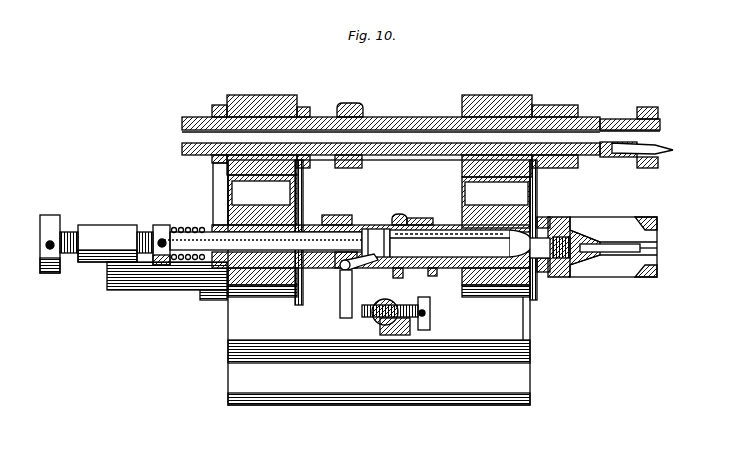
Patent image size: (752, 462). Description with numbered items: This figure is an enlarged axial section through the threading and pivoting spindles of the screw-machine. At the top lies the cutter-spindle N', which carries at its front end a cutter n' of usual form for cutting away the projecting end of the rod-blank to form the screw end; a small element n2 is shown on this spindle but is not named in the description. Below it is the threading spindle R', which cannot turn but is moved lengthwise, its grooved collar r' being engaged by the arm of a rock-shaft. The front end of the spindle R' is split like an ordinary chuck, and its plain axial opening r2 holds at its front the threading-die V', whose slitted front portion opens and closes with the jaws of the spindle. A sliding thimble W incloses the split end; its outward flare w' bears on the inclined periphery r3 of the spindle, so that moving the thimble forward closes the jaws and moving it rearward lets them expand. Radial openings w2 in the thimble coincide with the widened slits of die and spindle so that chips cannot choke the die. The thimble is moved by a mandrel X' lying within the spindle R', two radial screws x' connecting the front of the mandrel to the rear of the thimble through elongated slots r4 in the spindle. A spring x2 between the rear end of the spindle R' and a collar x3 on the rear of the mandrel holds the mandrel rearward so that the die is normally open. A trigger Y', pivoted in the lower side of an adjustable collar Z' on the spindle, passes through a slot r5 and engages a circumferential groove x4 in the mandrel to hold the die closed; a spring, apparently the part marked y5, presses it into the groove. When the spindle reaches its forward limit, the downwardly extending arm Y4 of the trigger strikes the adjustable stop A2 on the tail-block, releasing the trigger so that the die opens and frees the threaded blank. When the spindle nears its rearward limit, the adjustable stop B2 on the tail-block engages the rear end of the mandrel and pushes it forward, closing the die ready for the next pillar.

The cutter-spindle N' is at (421, 136).
The set screw n2 is at (350, 100).
The cutter n' is at (650, 137).
The threading spindle R' is at (374, 232).
The collar Z' is at (337, 209).
The slot r5 is at (362, 232).
The grooved collar r' is at (461, 225).
The collar x3 is at (160, 225).
The spring x2 is at (186, 227).
The adjustable stop B2 is at (68, 258).
The mandrel X' is at (305, 300).
The trigger Y' is at (332, 296).
The arm Y4 is at (346, 300).
The lever pivot arc y5 is at (383, 283).
The circumferential groove x4 is at (385, 283).
The adjustable stop A2 is at (430, 314).
The screws x' is at (546, 245).
The slots r4 is at (565, 225).
The radial openings w2 is at (612, 222).
The thimble W is at (648, 218).
The inclined periphery of spindle r3 is at (657, 235).
The threading-die V' is at (631, 251).
The axial opening r2 is at (606, 270).
The outward flare w' is at (655, 288).